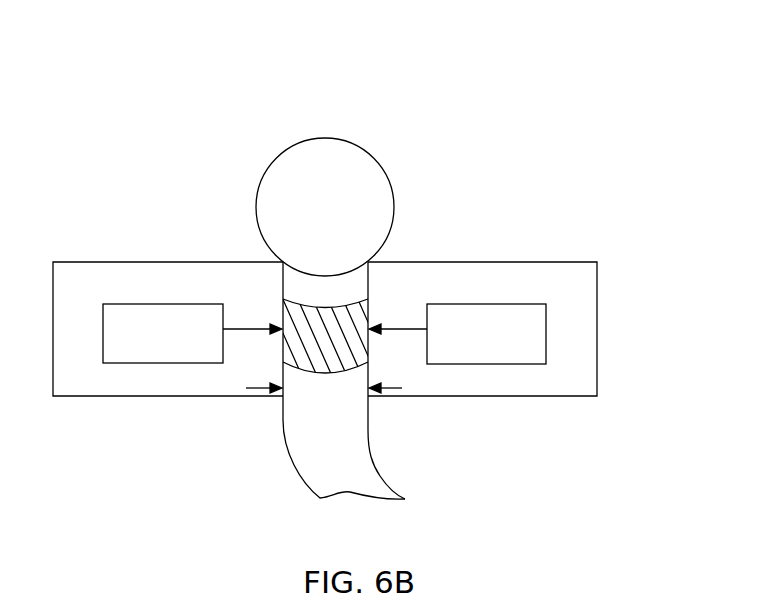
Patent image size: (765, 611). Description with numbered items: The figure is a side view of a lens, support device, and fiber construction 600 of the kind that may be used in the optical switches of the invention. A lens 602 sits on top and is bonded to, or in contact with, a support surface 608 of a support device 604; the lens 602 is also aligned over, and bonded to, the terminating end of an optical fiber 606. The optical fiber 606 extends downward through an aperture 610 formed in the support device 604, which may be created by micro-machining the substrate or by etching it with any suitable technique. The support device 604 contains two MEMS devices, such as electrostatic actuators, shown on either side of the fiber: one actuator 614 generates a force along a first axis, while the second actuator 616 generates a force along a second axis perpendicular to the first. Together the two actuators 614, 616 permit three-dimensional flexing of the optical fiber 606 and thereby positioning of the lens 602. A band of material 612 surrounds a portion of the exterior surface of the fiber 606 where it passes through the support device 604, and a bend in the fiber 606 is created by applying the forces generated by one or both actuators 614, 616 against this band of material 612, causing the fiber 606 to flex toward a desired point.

The construction 600 is at (598, 158).
The lens 602 is at (394, 208).
The support device 604 is at (597, 333).
The optical fiber 606 is at (380, 472).
The support surface 608 is at (127, 262).
The aperture 610 is at (246, 388).
The band of material 612 is at (368, 299).
The actuator 614 is at (146, 344).
The second actuator 616 is at (469, 344).